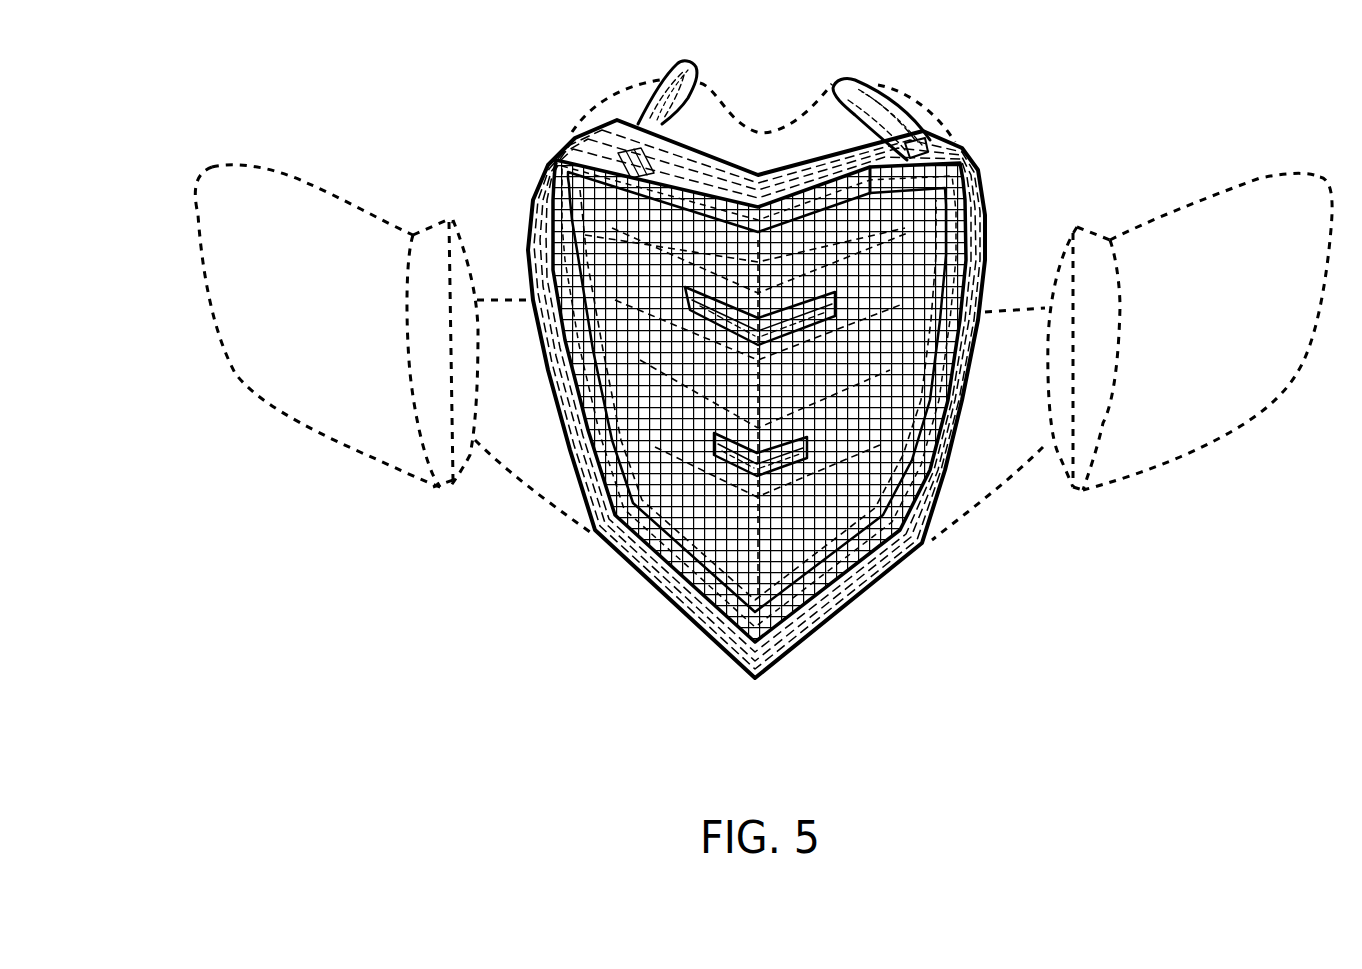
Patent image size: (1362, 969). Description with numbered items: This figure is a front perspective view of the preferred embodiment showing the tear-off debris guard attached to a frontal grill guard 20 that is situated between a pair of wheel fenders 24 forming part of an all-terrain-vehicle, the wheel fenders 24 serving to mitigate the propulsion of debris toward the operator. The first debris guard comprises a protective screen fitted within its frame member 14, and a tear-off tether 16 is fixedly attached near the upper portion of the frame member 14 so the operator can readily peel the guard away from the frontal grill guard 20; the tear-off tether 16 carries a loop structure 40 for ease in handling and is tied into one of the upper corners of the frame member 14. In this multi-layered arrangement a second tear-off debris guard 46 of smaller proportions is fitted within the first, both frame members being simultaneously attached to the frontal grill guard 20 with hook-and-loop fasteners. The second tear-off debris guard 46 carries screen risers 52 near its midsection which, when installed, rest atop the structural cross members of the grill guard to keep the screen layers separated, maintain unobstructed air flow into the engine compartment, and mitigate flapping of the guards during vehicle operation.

The frame member 14 is at (767, 383).
The tear-off tether 16 is at (863, 86).
The frontal grill guard 20 is at (933, 115).
The wheel fenders 24 is at (323, 192).
The loop structure 40 is at (667, 67).
The second tear-off debris guard 46 is at (853, 570).
The screen risers 52 is at (728, 455).